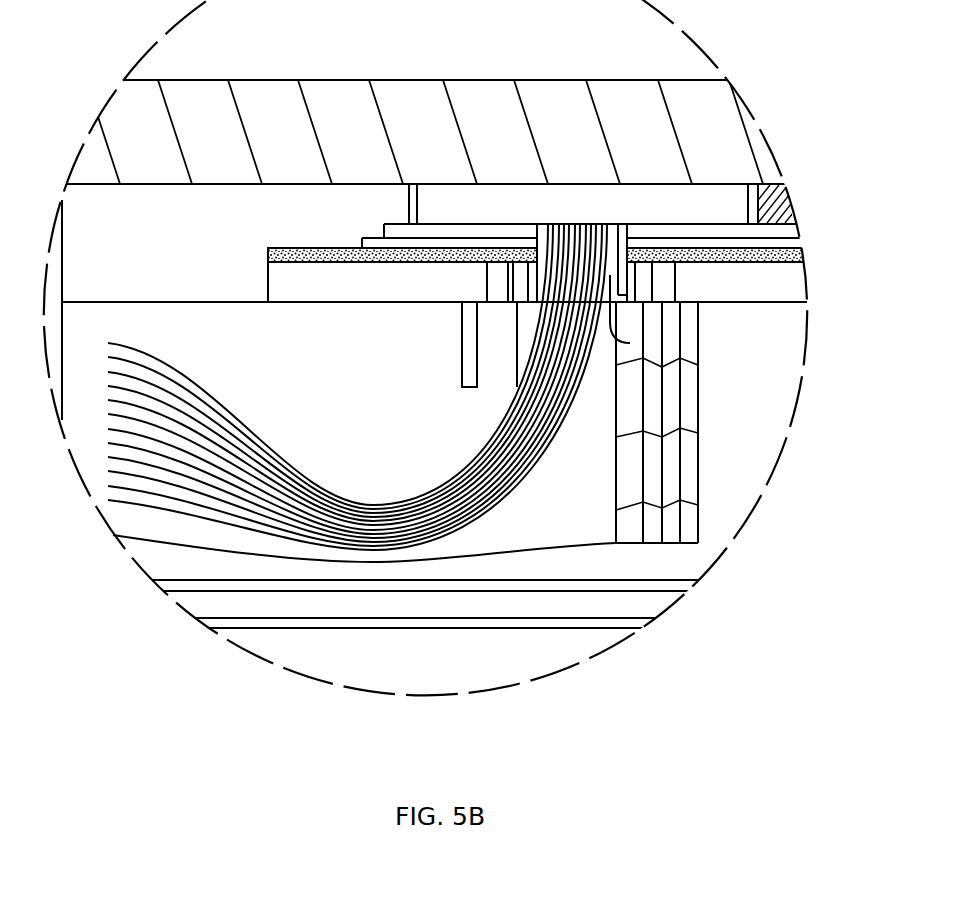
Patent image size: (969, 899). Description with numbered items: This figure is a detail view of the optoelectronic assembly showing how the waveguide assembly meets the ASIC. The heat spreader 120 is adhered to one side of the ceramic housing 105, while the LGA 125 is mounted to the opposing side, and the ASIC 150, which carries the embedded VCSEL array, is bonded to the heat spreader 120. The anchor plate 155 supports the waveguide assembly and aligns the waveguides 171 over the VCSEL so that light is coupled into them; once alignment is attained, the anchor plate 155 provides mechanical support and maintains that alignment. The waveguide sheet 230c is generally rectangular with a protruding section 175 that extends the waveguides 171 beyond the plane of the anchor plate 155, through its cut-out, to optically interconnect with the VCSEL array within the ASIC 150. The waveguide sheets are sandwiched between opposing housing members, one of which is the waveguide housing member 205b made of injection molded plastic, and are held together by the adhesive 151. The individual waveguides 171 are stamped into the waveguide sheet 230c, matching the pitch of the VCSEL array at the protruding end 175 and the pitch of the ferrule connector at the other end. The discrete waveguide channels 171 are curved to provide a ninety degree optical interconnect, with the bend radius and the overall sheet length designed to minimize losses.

The heat spreader 120 is at (732, 120).
The application specific integrated circuit (ASIC) 150 is at (720, 198).
The ceramic housing 105 is at (790, 215).
The adhesive 151 is at (792, 252).
The anchor plate 155 is at (780, 292).
The protruding section 175 is at (630, 343).
The waveguide housing member 205b is at (632, 410).
The waveguides 171 is at (200, 380).
The waveguide sheet 230c is at (207, 527).
The LGA 125 is at (645, 605).